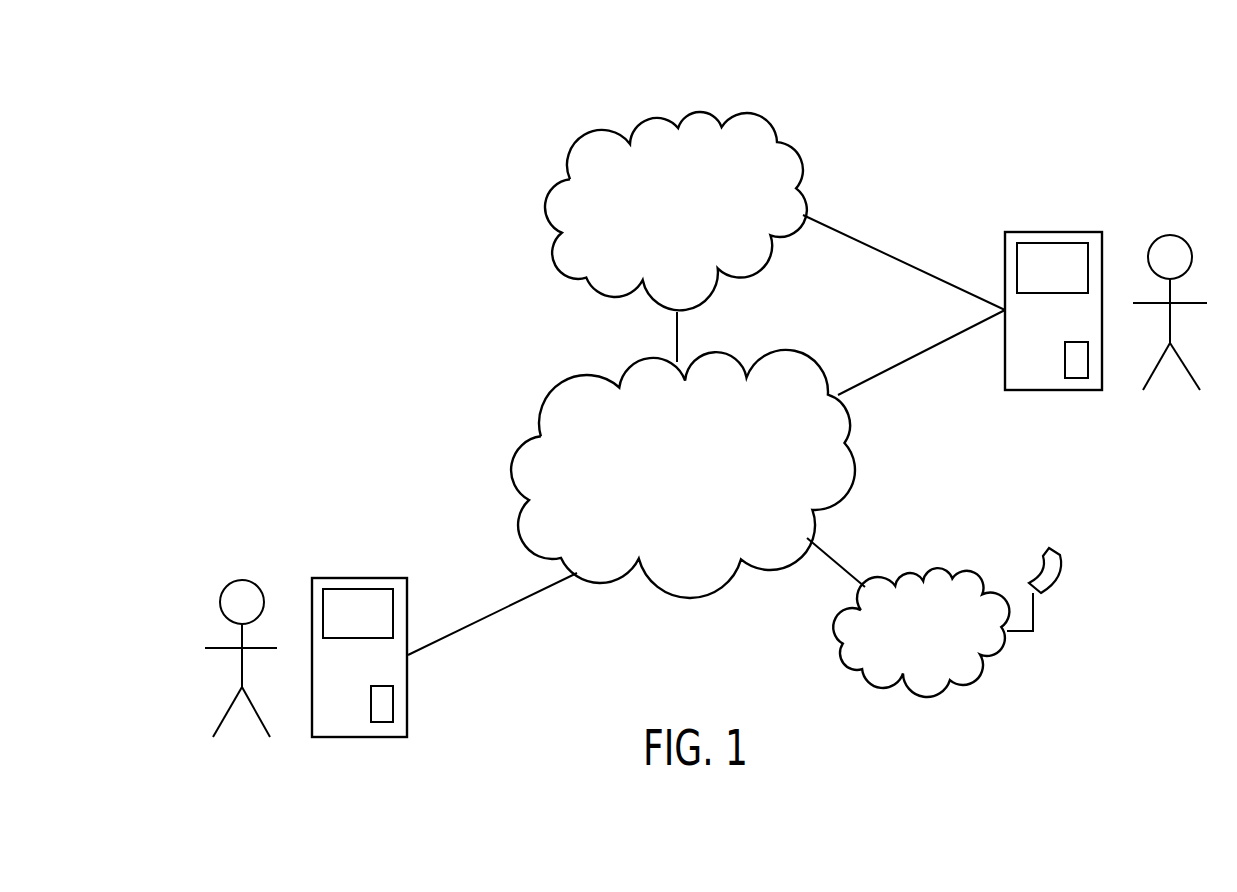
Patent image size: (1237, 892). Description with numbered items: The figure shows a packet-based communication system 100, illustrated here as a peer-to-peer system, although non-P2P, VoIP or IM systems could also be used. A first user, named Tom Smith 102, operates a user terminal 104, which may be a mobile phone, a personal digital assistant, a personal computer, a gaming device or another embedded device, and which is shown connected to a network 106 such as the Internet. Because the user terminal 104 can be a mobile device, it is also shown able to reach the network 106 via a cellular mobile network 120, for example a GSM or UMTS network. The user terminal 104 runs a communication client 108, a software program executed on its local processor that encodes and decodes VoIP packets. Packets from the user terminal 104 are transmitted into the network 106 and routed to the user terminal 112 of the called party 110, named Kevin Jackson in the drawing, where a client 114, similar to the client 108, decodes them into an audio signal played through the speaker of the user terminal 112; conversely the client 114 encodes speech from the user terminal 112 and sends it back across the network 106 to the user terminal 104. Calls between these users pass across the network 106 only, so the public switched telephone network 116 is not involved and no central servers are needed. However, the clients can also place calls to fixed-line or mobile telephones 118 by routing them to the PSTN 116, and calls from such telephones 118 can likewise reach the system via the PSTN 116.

The packet-based communication system 100 is at (391, 251).
The first user 102 is at (1170, 235).
The user terminal 104 is at (1033, 232).
The network 106 is at (855, 440).
The communication client 108 is at (1077, 372).
The called party 110 is at (242, 580).
The user terminal 112 is at (340, 578).
The client 114 is at (382, 717).
The public switched telephone network 116 is at (937, 572).
The fixed-line or mobile telephone 118 is at (1052, 549).
The cellular mobile network 120 is at (703, 110).